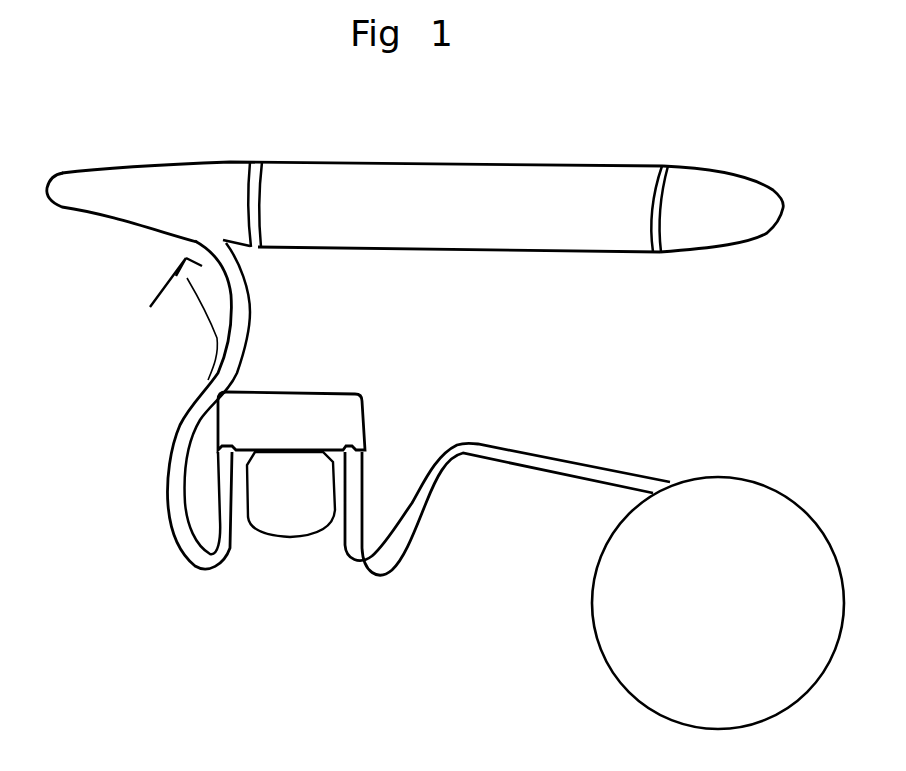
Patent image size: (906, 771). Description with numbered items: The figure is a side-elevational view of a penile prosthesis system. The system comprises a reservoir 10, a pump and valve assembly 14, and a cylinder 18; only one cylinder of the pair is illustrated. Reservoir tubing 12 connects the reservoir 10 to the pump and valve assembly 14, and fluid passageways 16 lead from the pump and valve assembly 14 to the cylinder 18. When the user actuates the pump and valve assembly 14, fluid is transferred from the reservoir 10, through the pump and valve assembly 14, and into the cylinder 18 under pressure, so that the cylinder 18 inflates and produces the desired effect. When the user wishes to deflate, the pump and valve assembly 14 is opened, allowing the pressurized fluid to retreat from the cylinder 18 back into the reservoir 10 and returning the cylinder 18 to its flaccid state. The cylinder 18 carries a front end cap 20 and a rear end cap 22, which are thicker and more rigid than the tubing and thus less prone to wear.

The reservoir 10 is at (763, 508).
The reservoir tubing 12 is at (588, 460).
The pump and valve assembly 14 is at (338, 422).
The fluid passageways 16 is at (194, 297).
The cylinder 18 is at (627, 124).
The front end cap 20 is at (743, 195).
The rear end cap 22 is at (198, 185).